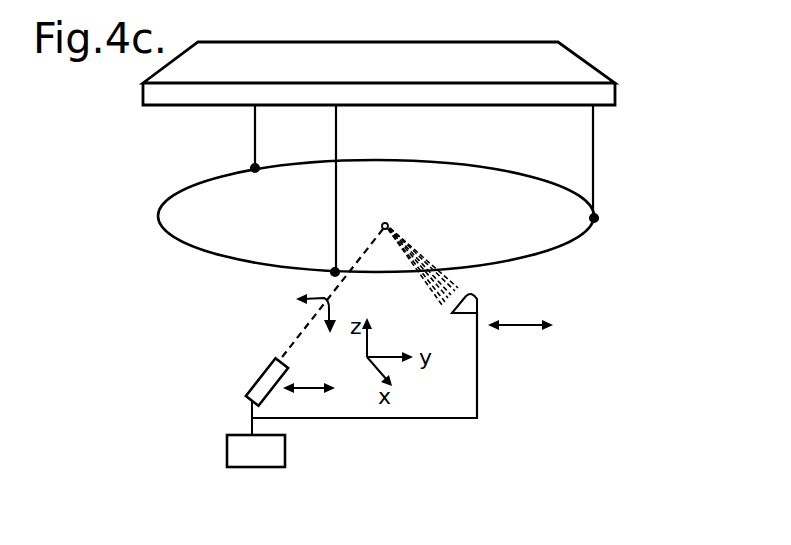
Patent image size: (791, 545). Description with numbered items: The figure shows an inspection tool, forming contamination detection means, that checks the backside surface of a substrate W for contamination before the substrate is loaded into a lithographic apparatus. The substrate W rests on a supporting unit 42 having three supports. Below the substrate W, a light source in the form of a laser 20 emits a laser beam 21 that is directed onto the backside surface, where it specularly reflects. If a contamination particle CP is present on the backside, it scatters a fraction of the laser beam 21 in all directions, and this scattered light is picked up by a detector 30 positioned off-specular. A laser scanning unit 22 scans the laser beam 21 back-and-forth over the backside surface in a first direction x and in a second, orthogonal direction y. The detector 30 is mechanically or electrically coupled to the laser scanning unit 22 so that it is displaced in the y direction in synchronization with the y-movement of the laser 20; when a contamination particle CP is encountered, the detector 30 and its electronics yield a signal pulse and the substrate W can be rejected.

The supporting unit 42 is at (575, 68).
The substrate W is at (491, 175).
The contamination particle CP is at (392, 223).
The laser beam 21 is at (307, 330).
The laser 20 is at (268, 378).
The laser scanning unit 22 is at (236, 448).
The detector 30 is at (468, 299).